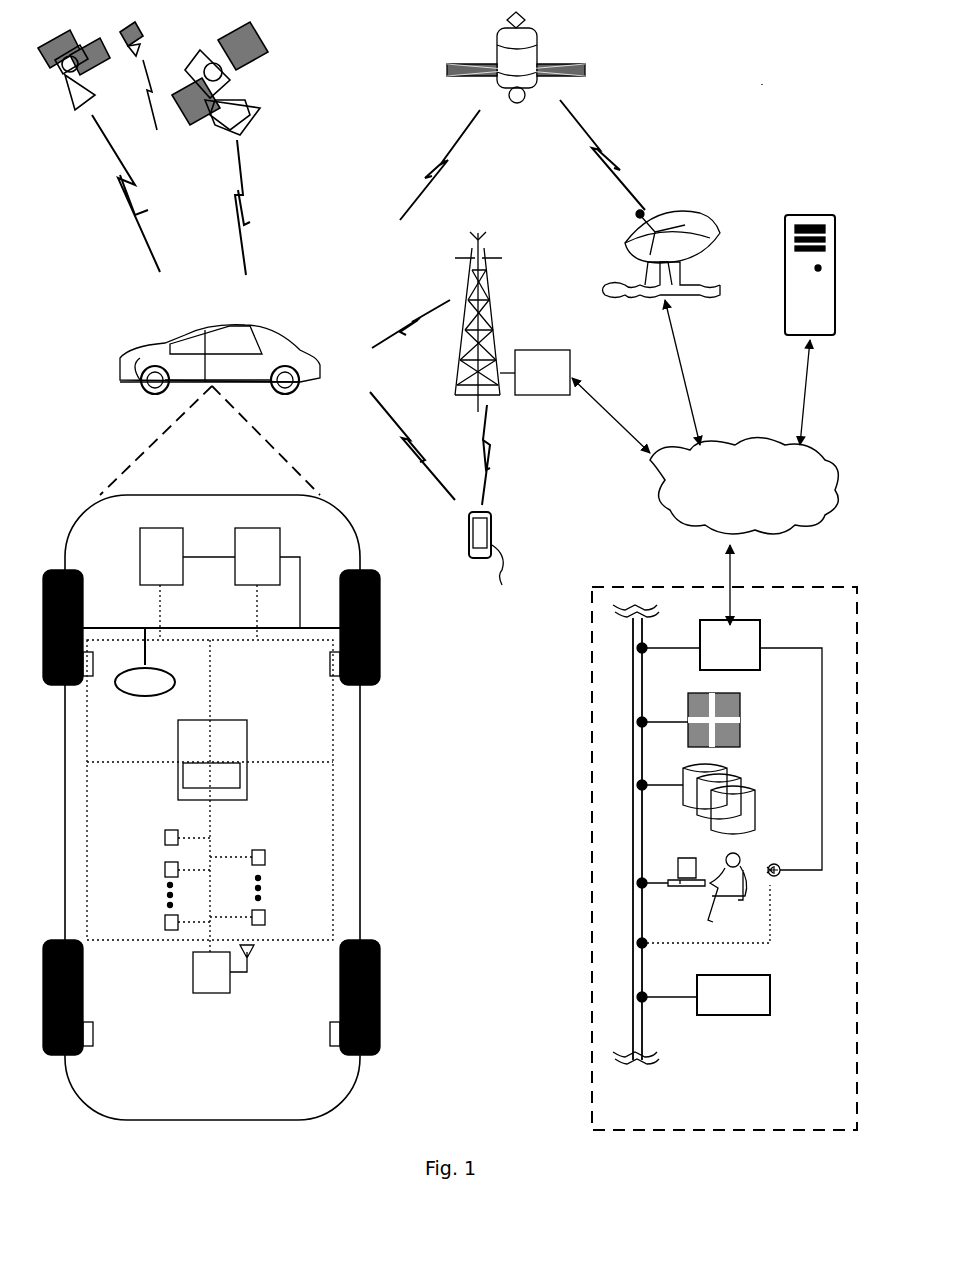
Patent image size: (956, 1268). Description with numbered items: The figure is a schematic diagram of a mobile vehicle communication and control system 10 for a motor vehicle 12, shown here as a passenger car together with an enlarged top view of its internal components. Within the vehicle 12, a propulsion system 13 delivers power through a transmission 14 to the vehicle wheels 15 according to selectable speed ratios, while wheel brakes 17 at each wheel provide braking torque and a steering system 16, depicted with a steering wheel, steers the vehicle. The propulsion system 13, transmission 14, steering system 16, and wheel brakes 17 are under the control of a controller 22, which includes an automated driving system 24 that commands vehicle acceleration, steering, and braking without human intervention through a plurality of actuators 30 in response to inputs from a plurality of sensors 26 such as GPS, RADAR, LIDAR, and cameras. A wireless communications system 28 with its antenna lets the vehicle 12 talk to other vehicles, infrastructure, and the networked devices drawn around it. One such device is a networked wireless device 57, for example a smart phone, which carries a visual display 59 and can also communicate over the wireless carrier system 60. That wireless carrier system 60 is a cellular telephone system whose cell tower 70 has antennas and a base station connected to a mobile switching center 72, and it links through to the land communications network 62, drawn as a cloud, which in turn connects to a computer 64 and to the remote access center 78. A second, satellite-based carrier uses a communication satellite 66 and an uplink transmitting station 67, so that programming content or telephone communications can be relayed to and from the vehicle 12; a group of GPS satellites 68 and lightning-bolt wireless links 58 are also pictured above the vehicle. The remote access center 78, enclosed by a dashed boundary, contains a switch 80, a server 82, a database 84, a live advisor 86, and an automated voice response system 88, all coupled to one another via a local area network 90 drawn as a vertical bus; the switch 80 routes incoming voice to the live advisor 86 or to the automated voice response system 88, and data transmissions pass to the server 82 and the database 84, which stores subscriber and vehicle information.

The mobile vehicle communication and control system 10 is at (762, 84).
The motor vehicle 12 is at (120, 364).
The propulsion system 13 is at (138, 556).
The transmission 14 is at (280, 532).
The vehicle wheels 15 is at (85, 590).
The steering system 16 is at (181, 714).
The wheel brakes 17 is at (90, 678).
The controller 22 is at (250, 765).
The automated driving system 24 is at (235, 800).
The sensors 26 is at (161, 840).
The wireless communications system 28 is at (210, 995).
The actuators 30 is at (265, 855).
The networked wireless device 57 is at (500, 578).
The wireless carrier system 58 is at (411, 415).
The visual display 59 is at (490, 533).
The wireless carrier system 60 is at (455, 402).
The land communications network 62 is at (830, 490).
The computer 64 is at (835, 302).
The communication satellite 66 is at (535, 40).
The uplink transmitting station 67 is at (690, 258).
The GPS satellite system 68 is at (275, 46).
The cell tower 70 is at (505, 310).
The mobile switching center 72 is at (540, 348).
The remote access center 78 is at (712, 1132).
The switch 80 is at (732, 745).
The server 82 is at (742, 713).
The database 84 is at (758, 798).
The live advisor 86 is at (698, 909).
The automated voice response system 88 is at (775, 995).
The local area network 90 is at (645, 1050).